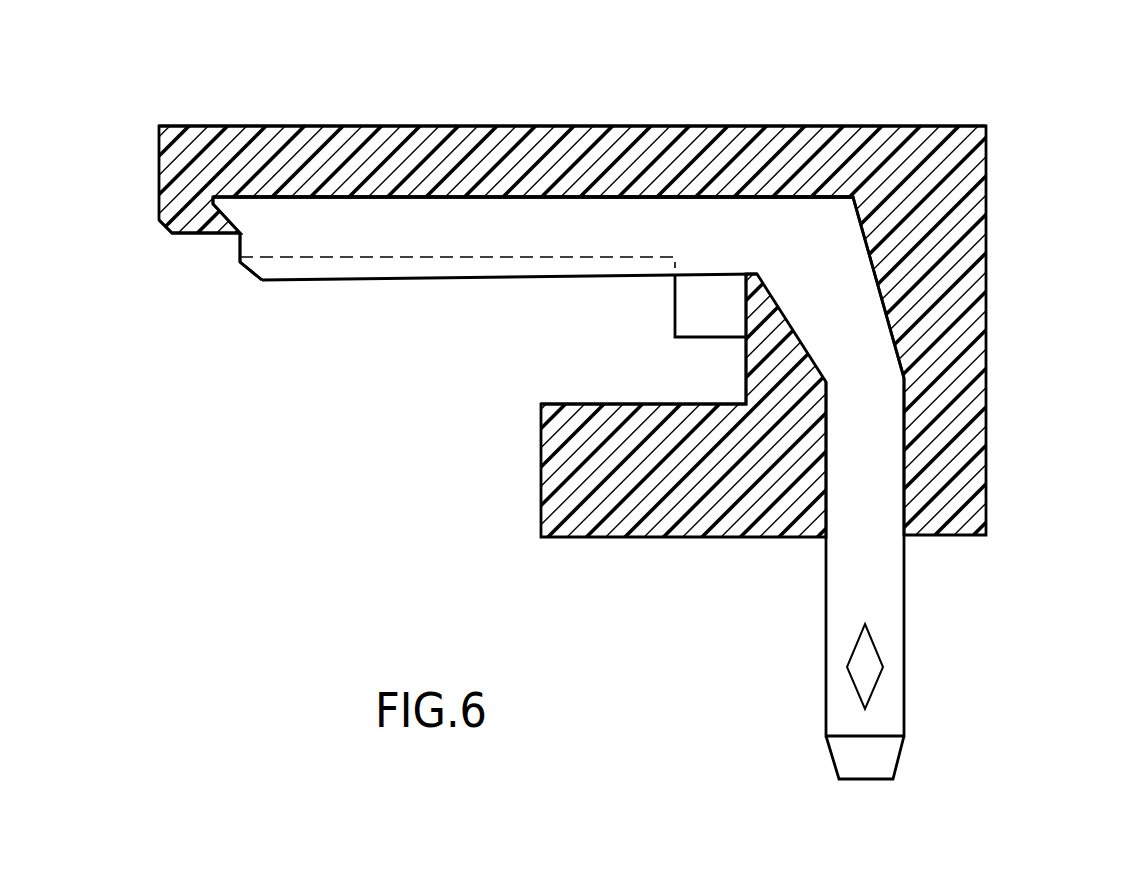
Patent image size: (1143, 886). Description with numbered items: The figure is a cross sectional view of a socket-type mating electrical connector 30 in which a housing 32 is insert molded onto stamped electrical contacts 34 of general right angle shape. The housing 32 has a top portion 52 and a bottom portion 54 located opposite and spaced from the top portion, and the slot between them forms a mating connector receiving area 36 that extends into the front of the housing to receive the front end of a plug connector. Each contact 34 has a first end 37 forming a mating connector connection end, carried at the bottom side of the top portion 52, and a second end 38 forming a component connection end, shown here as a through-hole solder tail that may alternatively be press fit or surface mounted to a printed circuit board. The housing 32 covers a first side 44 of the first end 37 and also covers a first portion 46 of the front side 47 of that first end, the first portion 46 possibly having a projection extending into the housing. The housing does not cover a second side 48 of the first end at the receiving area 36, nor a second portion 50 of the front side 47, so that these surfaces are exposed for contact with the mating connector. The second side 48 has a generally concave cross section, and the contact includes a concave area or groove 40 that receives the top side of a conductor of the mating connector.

The mating electrical connector 30 is at (1030, 62).
The housing 32 is at (986, 258).
The contacts 34 is at (428, 197).
The receiving area 36 is at (553, 353).
The first end 37 is at (319, 223).
The second end 38 is at (905, 673).
The groove 40 is at (422, 258).
The first side 44 is at (733, 195).
The first portion 46 is at (218, 197).
The front side 47 is at (240, 252).
The second side 48 is at (487, 280).
The second portion 50 is at (238, 262).
The top portion 52 is at (532, 143).
The bottom portion 54 is at (555, 470).